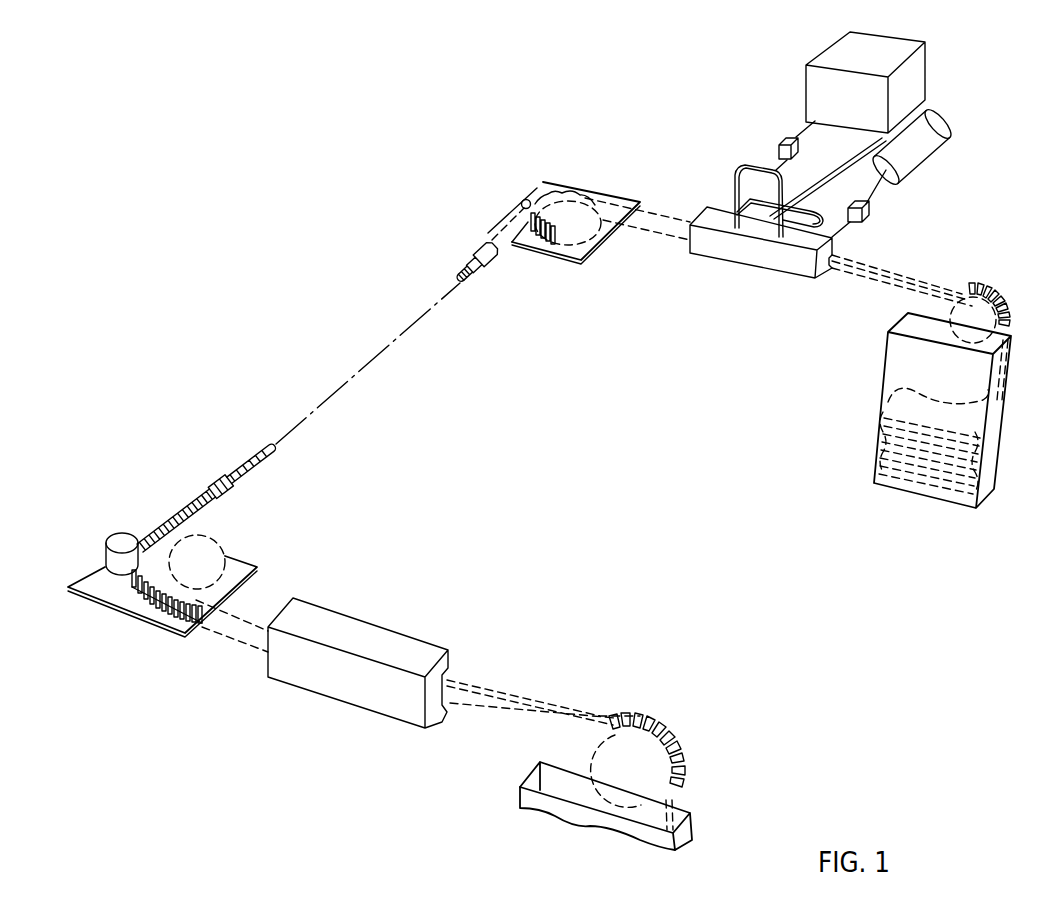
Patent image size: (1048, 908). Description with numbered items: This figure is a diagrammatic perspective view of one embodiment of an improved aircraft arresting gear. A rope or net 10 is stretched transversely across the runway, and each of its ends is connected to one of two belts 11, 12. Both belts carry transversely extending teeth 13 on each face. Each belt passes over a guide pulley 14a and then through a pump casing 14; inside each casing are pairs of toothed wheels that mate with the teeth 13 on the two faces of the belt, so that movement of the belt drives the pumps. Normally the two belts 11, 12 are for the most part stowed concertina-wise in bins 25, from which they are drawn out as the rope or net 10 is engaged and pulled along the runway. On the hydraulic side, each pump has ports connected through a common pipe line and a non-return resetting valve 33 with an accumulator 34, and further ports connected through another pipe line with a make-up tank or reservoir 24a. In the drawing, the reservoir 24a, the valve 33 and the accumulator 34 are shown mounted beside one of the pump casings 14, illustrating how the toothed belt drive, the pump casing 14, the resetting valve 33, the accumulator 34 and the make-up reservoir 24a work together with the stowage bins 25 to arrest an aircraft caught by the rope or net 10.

The rope or net 10 is at (462, 282).
The belt 11 is at (232, 625).
The belt 12 is at (637, 228).
The teeth 13 is at (535, 198).
The pump casing 14 is at (750, 255).
The guide pulley 14a is at (565, 222).
The make-up tank or reservoir 24a is at (820, 92).
The bin 25 is at (898, 378).
The non-return resetting valve 33 is at (868, 210).
The accumulator 34 is at (935, 140).